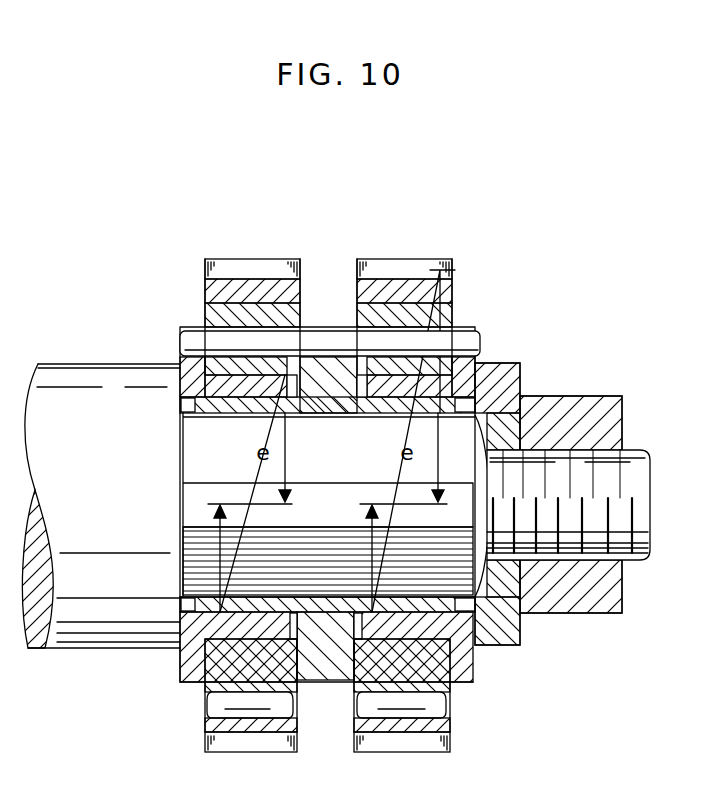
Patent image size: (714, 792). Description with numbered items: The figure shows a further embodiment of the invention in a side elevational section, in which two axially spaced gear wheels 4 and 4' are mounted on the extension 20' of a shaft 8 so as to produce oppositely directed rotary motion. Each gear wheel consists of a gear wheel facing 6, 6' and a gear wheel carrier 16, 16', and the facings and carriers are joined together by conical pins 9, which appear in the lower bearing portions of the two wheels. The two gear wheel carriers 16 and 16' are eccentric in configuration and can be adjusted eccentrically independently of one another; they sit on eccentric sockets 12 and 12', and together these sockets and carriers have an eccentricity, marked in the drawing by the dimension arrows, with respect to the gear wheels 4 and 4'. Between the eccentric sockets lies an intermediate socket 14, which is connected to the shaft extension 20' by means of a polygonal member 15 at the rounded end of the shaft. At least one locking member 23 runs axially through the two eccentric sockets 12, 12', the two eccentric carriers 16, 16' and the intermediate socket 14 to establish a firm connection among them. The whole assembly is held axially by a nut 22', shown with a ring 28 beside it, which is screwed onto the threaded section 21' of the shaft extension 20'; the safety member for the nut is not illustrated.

The gear wheel 4 is at (252, 291).
The gear wheel 4' is at (404, 291).
The gear wheel facing 6 is at (237, 246).
The gear wheel facing 6' is at (424, 246).
The shaft 8 is at (57, 378).
The conical pins 9 is at (220, 708).
The eccentric socket 12 is at (208, 655).
The eccentric socket 12' is at (442, 655).
The intermediate socket 14 is at (325, 665).
The polygonal member 15 is at (476, 437).
The gear wheel carrier 16 is at (224, 327).
The gear wheel carrier 16' is at (440, 327).
The shaft extension 20' is at (293, 505).
The threaded section 21' is at (586, 482).
The nut 22' is at (580, 486).
The locking member 23 is at (188, 343).
The clamping ring 28 is at (497, 373).